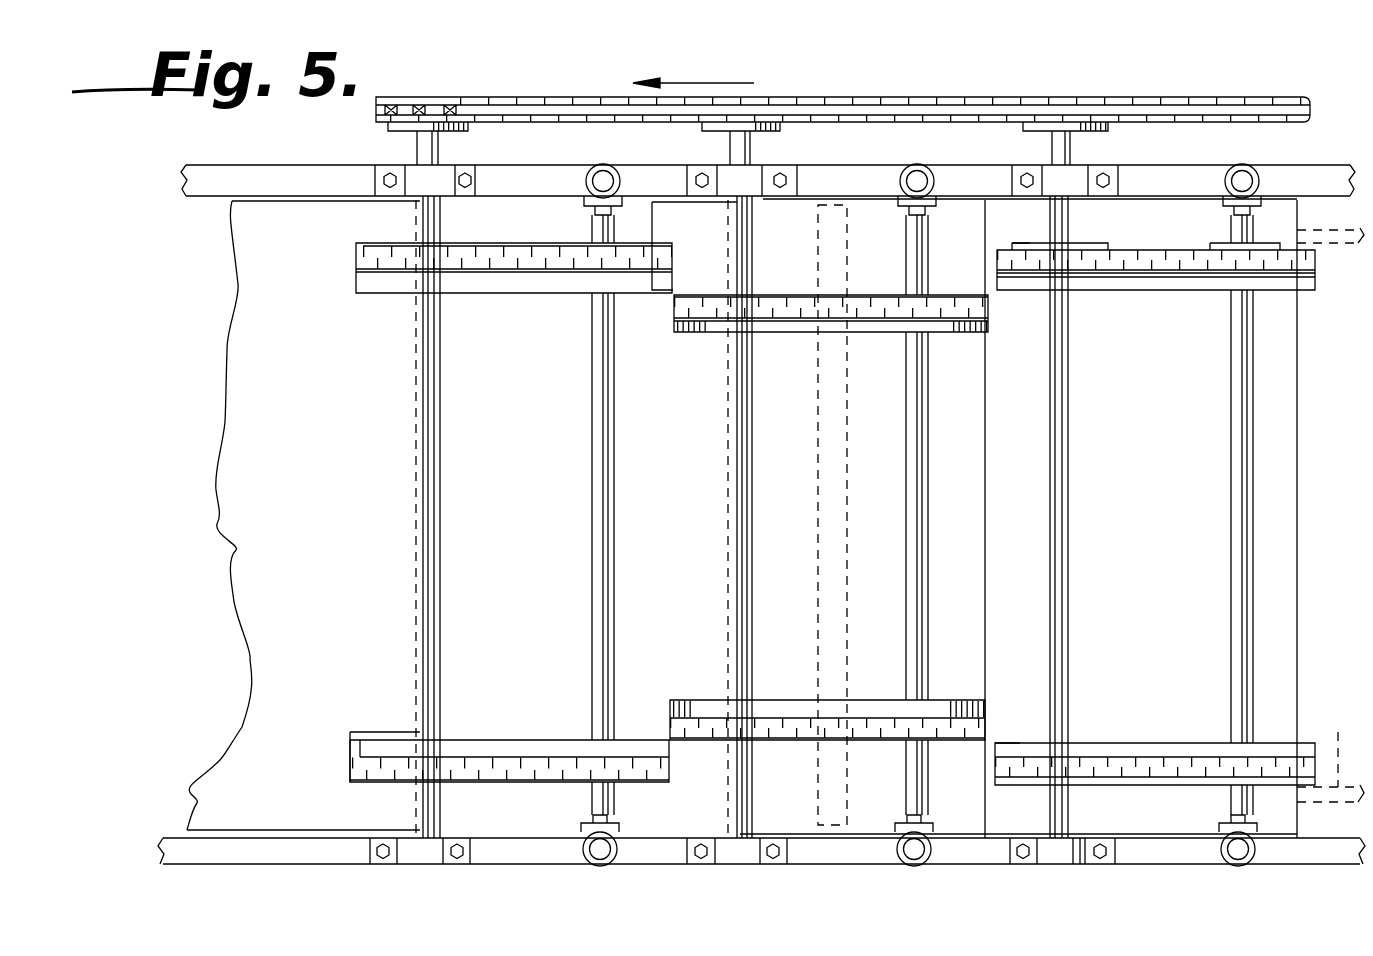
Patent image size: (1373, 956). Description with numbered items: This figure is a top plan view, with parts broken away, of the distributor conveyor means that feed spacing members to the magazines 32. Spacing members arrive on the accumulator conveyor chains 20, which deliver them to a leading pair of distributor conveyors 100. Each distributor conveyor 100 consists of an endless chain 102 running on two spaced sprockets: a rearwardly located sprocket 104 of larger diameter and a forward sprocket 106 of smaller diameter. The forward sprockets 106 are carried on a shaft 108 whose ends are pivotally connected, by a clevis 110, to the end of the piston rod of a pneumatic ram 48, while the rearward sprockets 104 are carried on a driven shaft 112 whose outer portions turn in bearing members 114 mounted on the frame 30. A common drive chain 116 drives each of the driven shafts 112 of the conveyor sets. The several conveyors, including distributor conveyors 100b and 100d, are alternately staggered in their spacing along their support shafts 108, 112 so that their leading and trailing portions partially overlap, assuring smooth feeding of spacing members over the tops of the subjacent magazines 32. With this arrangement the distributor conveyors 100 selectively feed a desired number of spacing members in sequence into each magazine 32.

The accumulator conveyor chains 20 is at (1348, 246).
The frame 30 is at (1128, 864).
The magazines 32 is at (225, 502).
The pneumatic ram 48 is at (595, 168).
The distributor conveyors 100 is at (1165, 272).
The distributor conveyor 100b is at (523, 270).
The distributor conveyor 100d is at (788, 336).
The endless chain 102 is at (1108, 246).
The rearwardly located sprocket 104 is at (1036, 228).
The forward sprocket 106 is at (1200, 272).
The shaft 108 is at (1233, 521).
The clevis 110 is at (1238, 168).
The driven shaft 112 is at (432, 580).
The bearing members 114 is at (1077, 840).
The common drive chain 116 is at (376, 112).